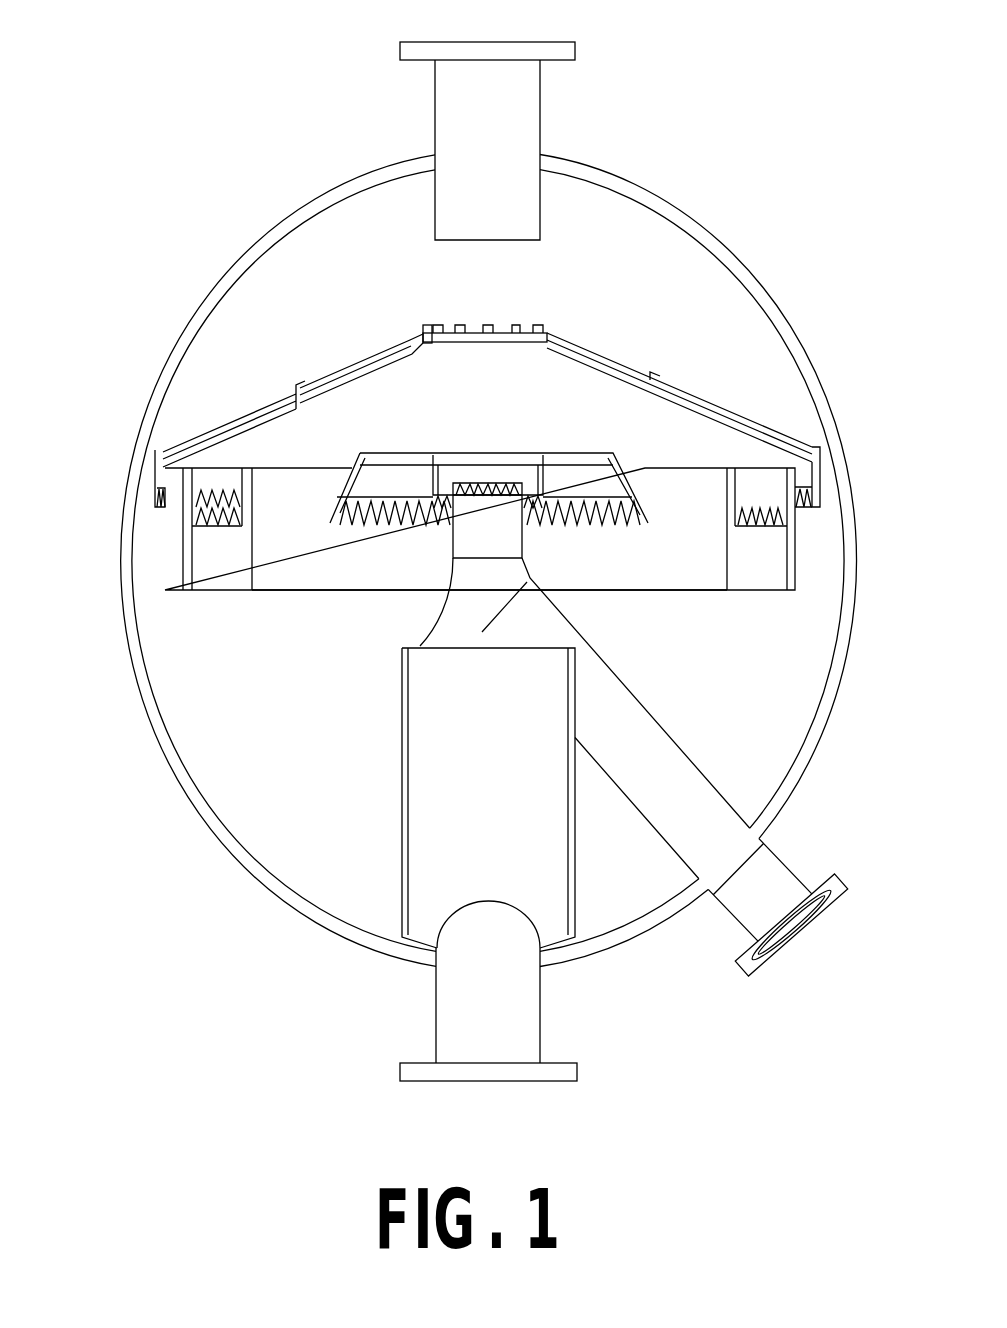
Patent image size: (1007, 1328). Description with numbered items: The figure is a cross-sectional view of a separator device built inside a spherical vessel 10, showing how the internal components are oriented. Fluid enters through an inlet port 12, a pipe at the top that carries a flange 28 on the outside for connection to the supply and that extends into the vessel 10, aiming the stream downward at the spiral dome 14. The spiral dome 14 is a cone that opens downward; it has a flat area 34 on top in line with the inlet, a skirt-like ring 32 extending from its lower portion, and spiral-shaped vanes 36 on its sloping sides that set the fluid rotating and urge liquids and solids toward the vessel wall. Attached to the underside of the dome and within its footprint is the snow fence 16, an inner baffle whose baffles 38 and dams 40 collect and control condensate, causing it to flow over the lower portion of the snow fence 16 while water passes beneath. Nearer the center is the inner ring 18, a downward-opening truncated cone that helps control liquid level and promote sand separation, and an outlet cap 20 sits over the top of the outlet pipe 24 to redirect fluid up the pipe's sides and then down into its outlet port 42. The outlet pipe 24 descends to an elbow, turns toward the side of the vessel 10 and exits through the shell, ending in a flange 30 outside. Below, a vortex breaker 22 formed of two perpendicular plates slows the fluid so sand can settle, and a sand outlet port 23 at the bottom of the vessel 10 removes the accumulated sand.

The vessel 10 is at (702, 227).
The inlet port 12 is at (528, 103).
The spiral dome 14 is at (674, 395).
The snow fence 16 is at (713, 573).
The inner ring 18 is at (380, 473).
The outlet cap 20 is at (322, 386).
The vortex breaker 22 is at (427, 873).
The sand outlet port 23 is at (448, 1020).
The outlet pipe 24 is at (743, 888).
The flange 28 is at (412, 50).
The flange 30 is at (770, 930).
The ring 32 is at (160, 497).
The flat area 34 is at (423, 330).
The spiral-shaped vanes 36 is at (293, 400).
The baffles 38 is at (590, 553).
The dams 40 is at (770, 540).
The outlet port 42 is at (491, 455).